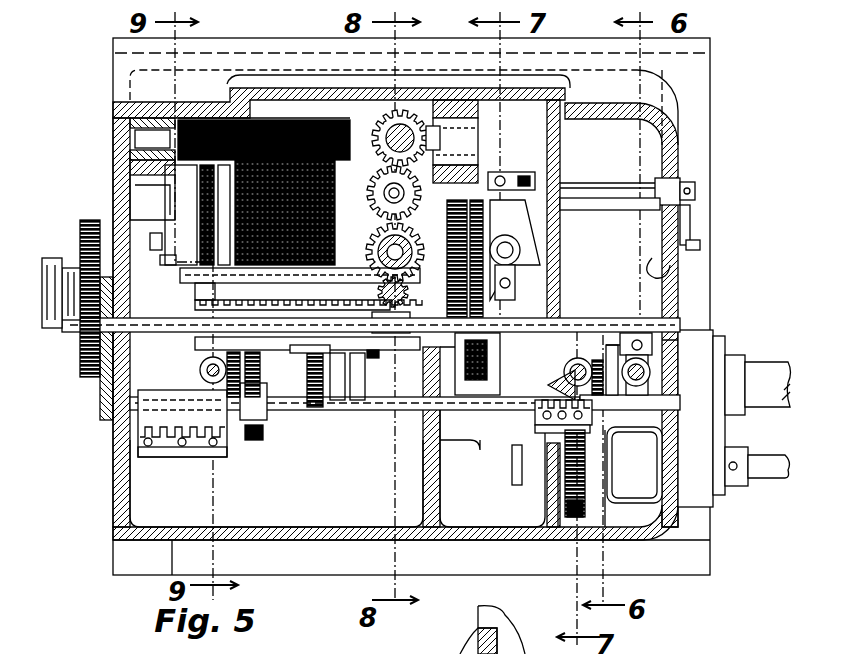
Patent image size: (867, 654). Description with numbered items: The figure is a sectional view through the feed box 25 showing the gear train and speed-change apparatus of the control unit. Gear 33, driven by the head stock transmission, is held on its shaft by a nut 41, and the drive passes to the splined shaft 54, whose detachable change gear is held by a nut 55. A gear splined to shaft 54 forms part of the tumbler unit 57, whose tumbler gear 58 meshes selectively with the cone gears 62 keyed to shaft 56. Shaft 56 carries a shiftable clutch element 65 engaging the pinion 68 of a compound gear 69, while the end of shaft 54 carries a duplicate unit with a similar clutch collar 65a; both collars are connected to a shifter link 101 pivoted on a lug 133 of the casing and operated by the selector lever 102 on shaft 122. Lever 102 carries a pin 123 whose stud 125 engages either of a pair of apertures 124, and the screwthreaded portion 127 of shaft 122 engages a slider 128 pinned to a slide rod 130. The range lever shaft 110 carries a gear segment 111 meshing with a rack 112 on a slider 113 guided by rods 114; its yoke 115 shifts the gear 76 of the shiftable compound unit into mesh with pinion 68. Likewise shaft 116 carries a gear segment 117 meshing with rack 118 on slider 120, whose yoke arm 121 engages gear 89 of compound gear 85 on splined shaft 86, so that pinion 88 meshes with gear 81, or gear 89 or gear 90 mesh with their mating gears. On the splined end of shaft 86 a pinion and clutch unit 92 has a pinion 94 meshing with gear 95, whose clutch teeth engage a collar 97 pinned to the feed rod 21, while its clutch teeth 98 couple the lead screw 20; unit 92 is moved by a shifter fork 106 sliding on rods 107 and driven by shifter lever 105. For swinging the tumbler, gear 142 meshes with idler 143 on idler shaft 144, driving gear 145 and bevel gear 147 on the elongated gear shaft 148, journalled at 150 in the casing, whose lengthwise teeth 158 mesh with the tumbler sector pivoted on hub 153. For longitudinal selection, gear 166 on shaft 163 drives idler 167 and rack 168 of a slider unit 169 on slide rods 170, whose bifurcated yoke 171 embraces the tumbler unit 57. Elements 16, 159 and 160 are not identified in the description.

The clutch member 16 is at (150, 238).
The lead screw 20 is at (770, 372).
The feed rod 21 is at (770, 460).
The feed box 25 is at (685, 108).
The gear 33 is at (88, 365).
The nut 41 is at (60, 270).
The splined shaft 54 is at (100, 335).
The nut 55 is at (62, 325).
The shaft 56 is at (140, 200).
The tumbler unit 57 is at (172, 260).
The tumbler gear 58 is at (200, 218).
The cone gears 62 is at (305, 160).
The shiftable clutch element 65 is at (320, 160).
The shiftable clutch collar 65a is at (560, 380).
The pinion 68 is at (510, 172).
The compound gear 69 is at (410, 352).
The gear 76 is at (490, 370).
The gear 81 is at (420, 420).
The compound gear 85 is at (280, 420).
The splined shaft 86 is at (360, 400).
The pinion 88 is at (315, 410).
The gear 89 is at (255, 442).
The gear 90 is at (262, 371).
The pinion and clutch unit 92 is at (630, 410).
The pinion 94 is at (598, 360).
The gear 95 is at (565, 540).
The collar 97 is at (590, 480).
The clutch teeth 98 is at (680, 390).
The shifter link 101 is at (540, 232).
The selector lever 102 is at (696, 206).
The shifter lever 105 is at (628, 358).
The shifter fork 106 is at (600, 410).
The rods 107 is at (620, 340).
The shaft 110 is at (578, 358).
The gear segment 111 is at (572, 360).
The rack 112 is at (535, 430).
The slider 113 is at (535, 415).
The rods 114 is at (445, 450).
The yoke 115 is at (487, 352).
The shaft 116 is at (210, 365).
The gear segment 117 is at (225, 440).
The rack 118 is at (182, 448).
The slider 120 is at (115, 436).
The yoke arm 121 is at (270, 420).
The shaft 122 is at (606, 195).
The pin 123 is at (692, 240).
The apertures 124 is at (672, 270).
The stud 125 is at (700, 258).
The screwthreaded portion 127 is at (530, 182).
The slider 128 is at (508, 180).
The slide rod 130 is at (560, 210).
The lug 133 is at (522, 250).
The gear 142 is at (389, 197).
The idler 143 is at (384, 193).
The idler shaft 144 is at (372, 185).
The gear 145 is at (400, 108).
The bevel gear 147 is at (440, 100).
The elongated gear shaft 148 is at (275, 128).
The journals 150 is at (480, 120).
The hub 153 is at (240, 300).
The teeth 158 is at (278, 100).
The pulley 159 is at (200, 370).
The bar 160 is at (228, 283).
The shaft 163 is at (378, 258).
The gear 166 is at (370, 250).
The idler 167 is at (391, 322).
The rack 168 is at (340, 360).
The slider unit 169 is at (372, 360).
The slide rods 170 is at (337, 400).
The bifurcated yoke 171 is at (200, 283).